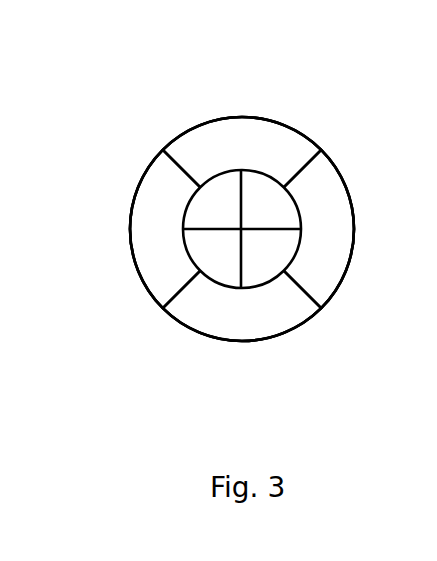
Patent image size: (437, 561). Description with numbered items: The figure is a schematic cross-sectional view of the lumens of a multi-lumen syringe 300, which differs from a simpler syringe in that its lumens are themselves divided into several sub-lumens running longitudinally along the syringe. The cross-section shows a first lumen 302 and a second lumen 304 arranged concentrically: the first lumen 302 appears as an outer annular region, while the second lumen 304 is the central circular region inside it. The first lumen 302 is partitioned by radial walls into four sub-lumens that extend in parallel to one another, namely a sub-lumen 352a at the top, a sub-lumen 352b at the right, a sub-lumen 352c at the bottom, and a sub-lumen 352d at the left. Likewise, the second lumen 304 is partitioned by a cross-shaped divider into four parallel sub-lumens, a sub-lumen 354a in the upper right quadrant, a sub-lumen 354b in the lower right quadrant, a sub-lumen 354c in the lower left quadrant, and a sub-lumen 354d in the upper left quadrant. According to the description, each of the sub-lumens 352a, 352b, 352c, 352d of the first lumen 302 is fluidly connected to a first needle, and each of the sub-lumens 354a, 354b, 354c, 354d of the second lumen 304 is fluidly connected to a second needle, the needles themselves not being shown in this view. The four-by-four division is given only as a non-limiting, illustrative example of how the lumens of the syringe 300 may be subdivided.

The multi-lumen syringe 300 is at (104, 117).
The first lumen 302 is at (137, 301).
The second lumen 304 is at (268, 291).
The sub-lumen 352a is at (242, 145).
The sub-lumen 352b is at (320, 275).
The sub-lumen 352c is at (210, 312).
The sub-lumen 352d is at (156, 192).
The sub-lumen 354a is at (267, 188).
The sub-lumen 354b is at (252, 265).
The sub-lumen 354c is at (203, 252).
The sub-lumen 354d is at (220, 187).